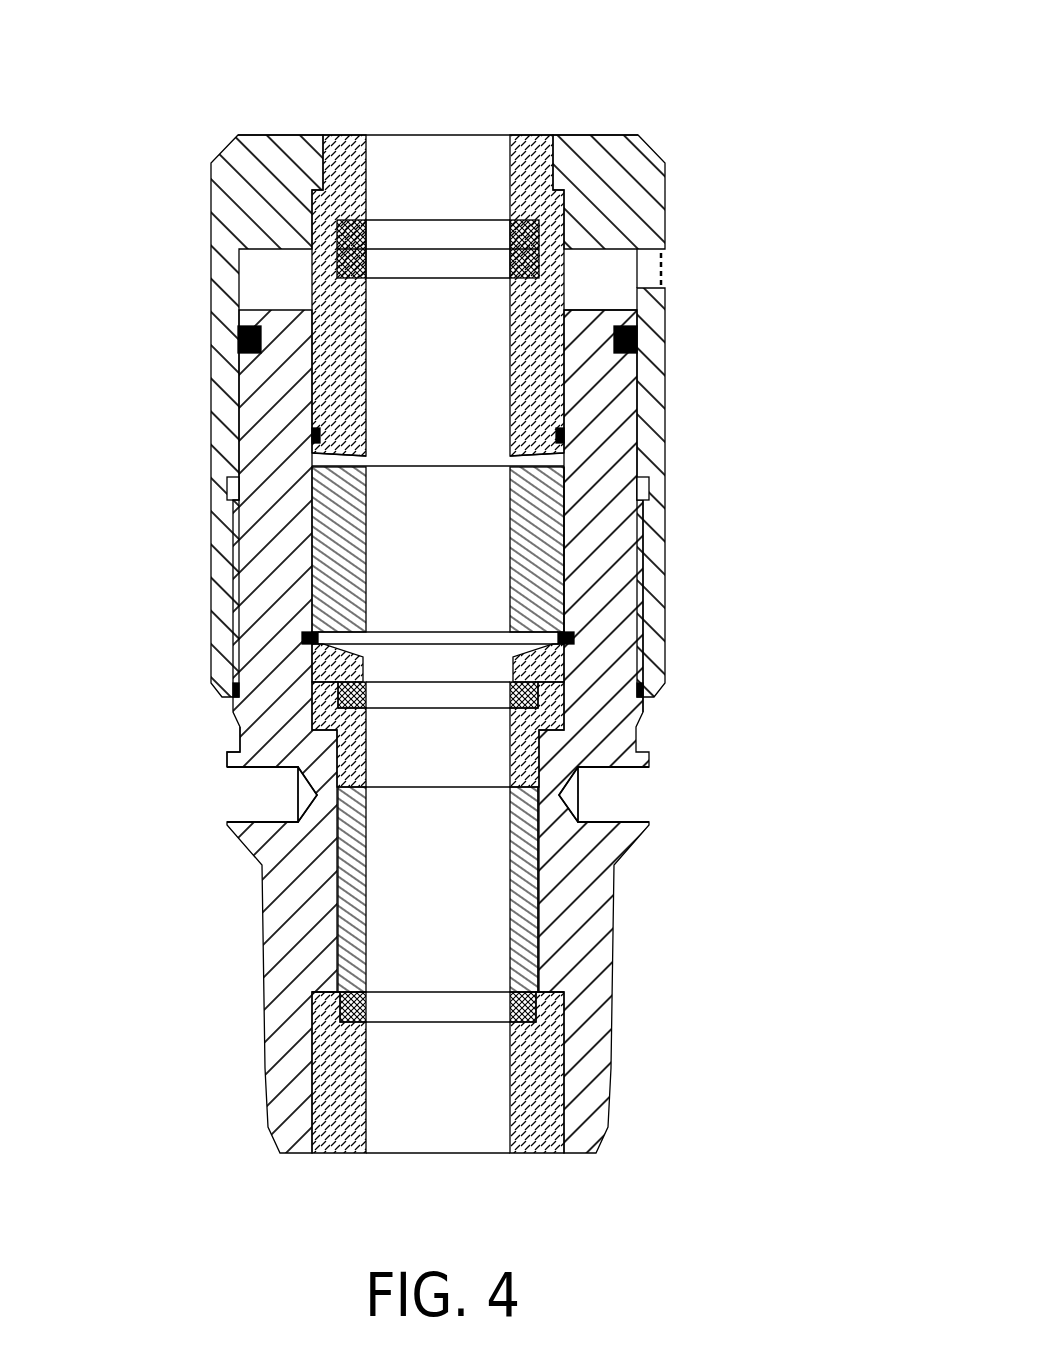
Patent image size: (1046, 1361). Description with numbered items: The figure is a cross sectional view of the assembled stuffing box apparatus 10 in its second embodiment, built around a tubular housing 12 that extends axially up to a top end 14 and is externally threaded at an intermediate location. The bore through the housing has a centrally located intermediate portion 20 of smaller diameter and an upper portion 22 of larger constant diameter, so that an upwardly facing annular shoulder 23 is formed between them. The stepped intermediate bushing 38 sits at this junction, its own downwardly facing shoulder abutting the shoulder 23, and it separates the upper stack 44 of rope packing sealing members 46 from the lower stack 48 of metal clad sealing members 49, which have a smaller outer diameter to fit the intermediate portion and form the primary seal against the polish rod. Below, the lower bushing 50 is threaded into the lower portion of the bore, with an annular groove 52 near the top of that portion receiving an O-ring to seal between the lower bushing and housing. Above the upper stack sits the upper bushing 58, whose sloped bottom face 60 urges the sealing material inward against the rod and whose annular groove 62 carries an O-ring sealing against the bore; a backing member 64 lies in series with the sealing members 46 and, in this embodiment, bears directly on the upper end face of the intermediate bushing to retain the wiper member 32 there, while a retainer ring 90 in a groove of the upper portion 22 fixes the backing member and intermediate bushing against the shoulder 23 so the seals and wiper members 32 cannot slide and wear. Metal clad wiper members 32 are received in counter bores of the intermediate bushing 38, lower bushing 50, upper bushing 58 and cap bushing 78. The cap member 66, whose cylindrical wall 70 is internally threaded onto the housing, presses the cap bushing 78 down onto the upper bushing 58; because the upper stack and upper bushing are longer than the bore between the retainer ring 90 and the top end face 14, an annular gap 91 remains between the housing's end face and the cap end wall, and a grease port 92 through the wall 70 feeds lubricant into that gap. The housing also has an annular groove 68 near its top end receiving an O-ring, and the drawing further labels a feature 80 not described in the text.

The stuffing box apparatus 10 is at (327, 78).
The tubular housing 12 is at (650, 445).
The top end 14 is at (603, 300).
The intermediate portion 20 is at (538, 943).
The upper portion 22 is at (566, 502).
The upwardly facing annular shoulder 23 is at (240, 752).
The wiper member 32 is at (325, 235).
The intermediate bushing 38 is at (576, 706).
The upper stack 44 is at (577, 550).
The sealing members 46 is at (711, 549).
The lower stack 48 is at (552, 902).
The sealing members 49 is at (693, 889).
The lower bushing 50 is at (577, 1078).
The annular groove 52 is at (564, 997).
The upper bushing 58 is at (577, 370).
The bottom face 60 is at (326, 462).
The annular groove 62 is at (300, 437).
The backing member 64 is at (577, 660).
The cap member 66 is at (678, 205).
The annular groove 68 is at (226, 341).
The cylindrical wall 70 is at (645, 420).
The cap bushing 78 is at (311, 165).
The port 80 is at (637, 807).
The retainer ring 90 is at (290, 637).
The annular gap 91 is at (600, 272).
The grease port 92 is at (676, 268).